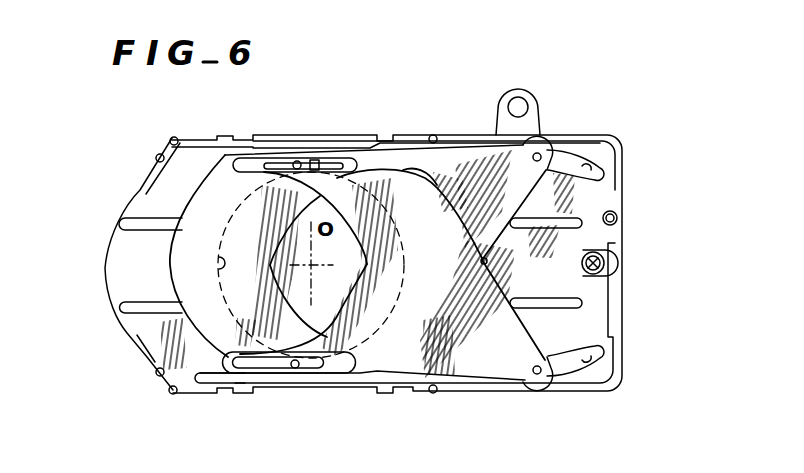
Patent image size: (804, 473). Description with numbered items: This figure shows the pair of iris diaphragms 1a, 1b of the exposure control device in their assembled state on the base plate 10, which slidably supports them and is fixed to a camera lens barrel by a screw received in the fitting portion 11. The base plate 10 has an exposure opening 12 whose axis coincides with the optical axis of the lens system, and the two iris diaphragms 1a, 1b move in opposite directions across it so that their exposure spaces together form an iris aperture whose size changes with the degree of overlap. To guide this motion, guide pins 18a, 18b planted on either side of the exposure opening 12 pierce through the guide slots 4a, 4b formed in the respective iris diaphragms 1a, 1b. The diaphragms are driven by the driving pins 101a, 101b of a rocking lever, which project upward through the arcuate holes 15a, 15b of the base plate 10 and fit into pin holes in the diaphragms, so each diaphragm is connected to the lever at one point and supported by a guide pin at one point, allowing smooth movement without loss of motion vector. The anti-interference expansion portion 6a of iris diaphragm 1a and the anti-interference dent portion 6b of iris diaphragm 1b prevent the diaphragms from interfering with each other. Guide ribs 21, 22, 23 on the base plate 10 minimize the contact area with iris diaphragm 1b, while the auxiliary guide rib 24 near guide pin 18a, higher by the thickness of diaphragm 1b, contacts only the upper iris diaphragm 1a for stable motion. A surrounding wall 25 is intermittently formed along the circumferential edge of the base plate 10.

The iris diaphragm 1a is at (478, 352).
The iris diaphragm 1b is at (480, 170).
The guide slot 4a is at (342, 368).
The guide slot 4b is at (258, 163).
The anti-interference expansion portion 6a is at (390, 170).
The anti-interference dent portion 6b is at (440, 187).
The base plate 10 is at (117, 247).
The fitting portion 11 is at (520, 90).
The exposure opening 12 is at (222, 268).
The arcuate hole 15a is at (598, 358).
The arcuate hole 15b is at (598, 168).
The guide pin 18a is at (296, 371).
The guide pin 18b is at (297, 162).
The guide rib 21 is at (577, 227).
The guide rib 22 is at (130, 307).
The guide rib 23 is at (133, 220).
The auxiliary guide rib 24 is at (210, 378).
The surrounding wall 25 is at (273, 138).
The driving pin 101a is at (539, 375).
The driving pin 101b is at (541, 154).